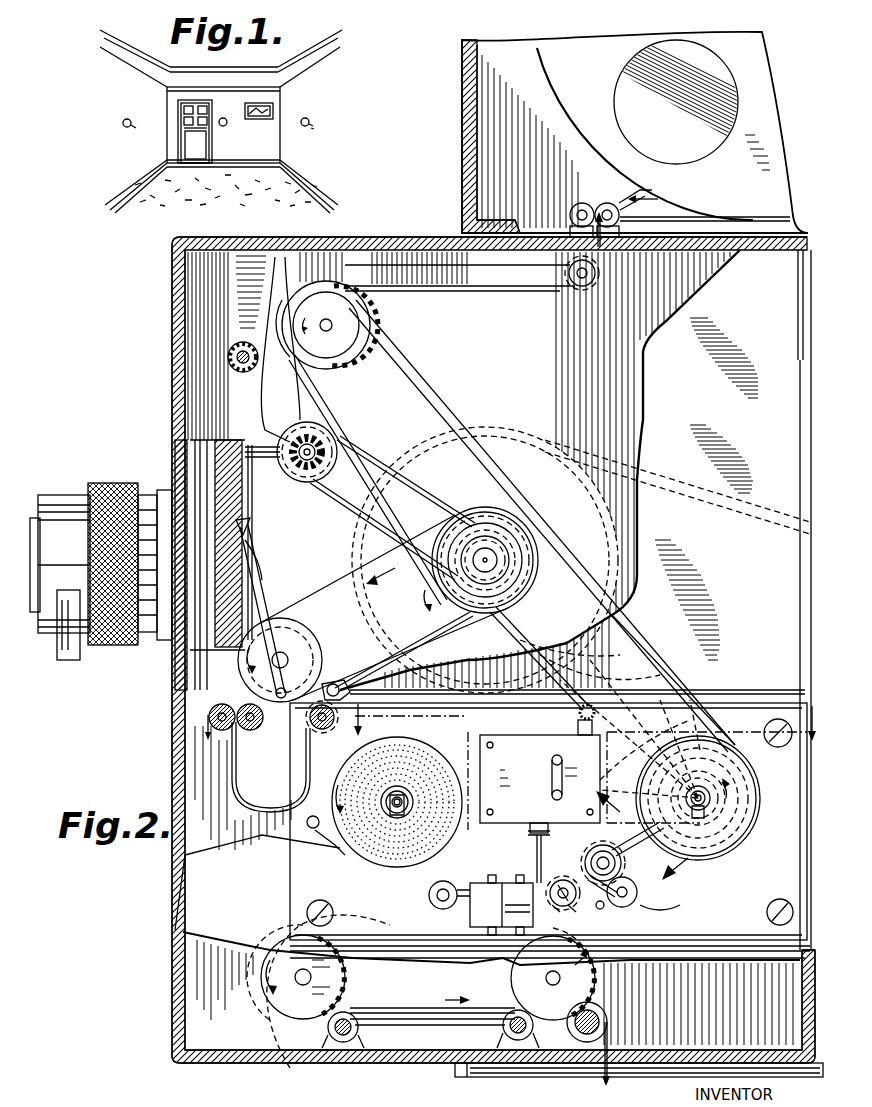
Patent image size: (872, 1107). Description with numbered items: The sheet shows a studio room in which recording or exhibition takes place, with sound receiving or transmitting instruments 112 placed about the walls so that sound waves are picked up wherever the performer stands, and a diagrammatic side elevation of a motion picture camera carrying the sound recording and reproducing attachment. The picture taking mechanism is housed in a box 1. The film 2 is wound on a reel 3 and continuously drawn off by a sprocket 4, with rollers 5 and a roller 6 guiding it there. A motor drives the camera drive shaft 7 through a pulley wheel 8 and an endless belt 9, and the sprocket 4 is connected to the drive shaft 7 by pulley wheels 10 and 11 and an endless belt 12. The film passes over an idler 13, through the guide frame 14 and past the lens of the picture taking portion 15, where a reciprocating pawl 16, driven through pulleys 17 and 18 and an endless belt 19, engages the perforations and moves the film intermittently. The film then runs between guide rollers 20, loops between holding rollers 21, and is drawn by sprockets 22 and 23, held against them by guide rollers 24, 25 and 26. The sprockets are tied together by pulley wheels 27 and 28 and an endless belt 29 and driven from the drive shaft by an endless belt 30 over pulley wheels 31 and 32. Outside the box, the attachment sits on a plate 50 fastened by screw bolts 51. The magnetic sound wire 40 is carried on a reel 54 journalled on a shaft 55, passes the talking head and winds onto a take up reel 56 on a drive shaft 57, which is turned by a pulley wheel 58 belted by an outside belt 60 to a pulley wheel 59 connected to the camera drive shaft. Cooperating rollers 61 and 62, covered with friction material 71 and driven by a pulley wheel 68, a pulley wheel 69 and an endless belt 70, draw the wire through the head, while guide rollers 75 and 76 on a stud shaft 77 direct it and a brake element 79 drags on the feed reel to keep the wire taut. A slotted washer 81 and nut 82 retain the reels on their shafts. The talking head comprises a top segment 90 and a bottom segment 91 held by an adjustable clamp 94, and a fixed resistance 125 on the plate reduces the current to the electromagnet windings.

In FIG. 1, the instruments 112 is at (125, 120).
In FIG. 2, the container or box 1 is at (250, 1064).
In FIG. 2, the film 2 is at (238, 812).
In FIG. 2, the reel 3 is at (592, 125).
In FIG. 2, the sprocket 4 is at (342, 345).
In FIG. 2, the rollers 5 is at (584, 203).
In FIG. 2, the roller 6 is at (568, 273).
In FIG. 2, the drive shaft 7 is at (492, 558).
In FIG. 2, the pulley wheel 8 is at (508, 448).
In FIG. 2, the endless belt 9 is at (690, 486).
In FIG. 2, the pulley wheel 10 is at (352, 288).
In FIG. 2, the pulley wheel 11 is at (468, 522).
In FIG. 2, the endless belt 12 is at (438, 402).
In FIG. 2, the idler 13 is at (230, 357).
In FIG. 2, the guide frame 14 is at (240, 493).
In FIG. 2, the picture taking portion 15 is at (122, 645).
In FIG. 2, the reciprocating pawl 16 is at (260, 598).
In FIG. 2, the pulley 17 is at (300, 640).
In FIG. 2, the pulley 18 is at (539, 658).
In FIG. 2, the endless belt 19 is at (385, 606).
In FIG. 2, the guide rollers 20 is at (221, 731).
In FIG. 2, the holding rollers 21 is at (309, 717).
In FIG. 2, the sprocket 22 is at (292, 1008).
In FIG. 2, the sprocket 23 is at (512, 975).
In FIG. 2, the guide roller 24 is at (328, 1032).
In FIG. 2, the guide roller 25 is at (503, 1028).
In FIG. 2, the guide roller 26 is at (602, 1021).
In FIG. 2, the pulley wheel 27 is at (255, 972).
In FIG. 2, the pulley wheel 28 is at (470, 999).
In FIG. 2, the endless belt 29 is at (410, 1026).
In FIG. 2, the endless belt 30 is at (605, 710).
In FIG. 2, the pulley wheel 31 is at (450, 535).
In FIG. 2, the pulley wheel 32 is at (613, 921).
In FIG. 2, the magnetic ribbon or wire 40 is at (406, 870).
In FIG. 2, the plate 50 is at (733, 935).
In FIG. 2, the screw bolts 51 is at (320, 900).
In FIG. 2, the reel 54 is at (386, 840).
In FIG. 2, the shaft 55 is at (404, 796).
In FIG. 2, the take up reel 56 is at (736, 850).
In FIG. 2, the drive shaft 57 is at (710, 799).
In FIG. 2, the pulley wheel 58 is at (702, 750).
In FIG. 2, the pulley wheel 59 is at (512, 522).
In FIG. 2, the outside belt 60 is at (630, 636).
In FIG. 2, the roller 61 is at (638, 839).
In FIG. 2, the roller 62 is at (636, 906).
In FIG. 2, the pulley wheel 68 is at (581, 863).
In FIG. 2, the pulley wheel 69 is at (698, 798).
In FIG. 2, the endless belt 70 is at (624, 880).
In FIG. 2, the friction material 71 is at (563, 876).
In FIG. 2, the guide roller 75 is at (437, 903).
In FIG. 2, the guide roller 76 is at (584, 917).
In FIG. 2, the stud shaft 77 is at (446, 886).
In FIG. 2, the brake element 79 is at (313, 830).
In FIG. 2, the slotted washer 81 is at (392, 808).
In FIG. 2, the nut 82 is at (400, 790).
In FIG. 2, the top segment 90 is at (526, 857).
In FIG. 2, the bottom segment 91 is at (521, 915).
In FIG. 2, the adjustable clamp 94 is at (501, 905).
In FIG. 2, the fixed resistance 125 is at (540, 769).